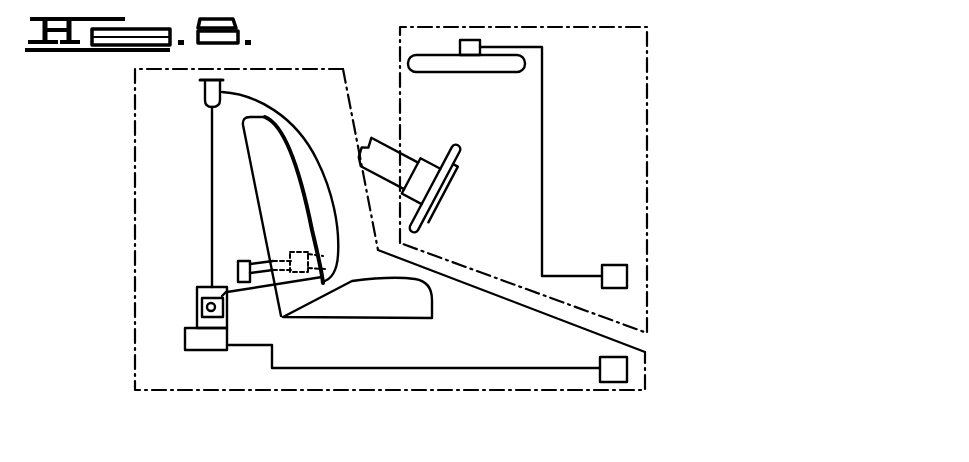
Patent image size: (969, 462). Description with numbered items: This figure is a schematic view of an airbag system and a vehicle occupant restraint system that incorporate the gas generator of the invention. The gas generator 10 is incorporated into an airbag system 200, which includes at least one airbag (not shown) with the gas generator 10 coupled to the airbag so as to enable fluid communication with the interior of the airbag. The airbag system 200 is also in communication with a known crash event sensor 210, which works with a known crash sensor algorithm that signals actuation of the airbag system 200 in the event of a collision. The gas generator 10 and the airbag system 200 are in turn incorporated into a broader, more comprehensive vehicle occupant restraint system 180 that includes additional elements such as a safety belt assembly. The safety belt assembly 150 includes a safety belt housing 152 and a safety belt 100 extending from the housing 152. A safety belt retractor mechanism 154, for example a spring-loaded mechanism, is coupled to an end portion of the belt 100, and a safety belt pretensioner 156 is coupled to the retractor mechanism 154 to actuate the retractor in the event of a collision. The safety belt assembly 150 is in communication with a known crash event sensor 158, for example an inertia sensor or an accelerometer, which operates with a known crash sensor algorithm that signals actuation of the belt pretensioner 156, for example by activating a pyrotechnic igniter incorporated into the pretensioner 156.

The gas generator 10 is at (438, 62).
The safety belt 100 is at (302, 130).
The safety belt assembly 150 is at (245, 391).
The safety belt housing 152 is at (202, 308).
The safety belt retractor mechanism 154 is at (203, 287).
The safety belt pretensioner 156 is at (216, 347).
The crash event sensor 158 is at (604, 365).
The vehicle occupant restraint system 180 is at (356, 61).
The airbag system 200 is at (647, 92).
The crash event sensor 210 is at (610, 265).